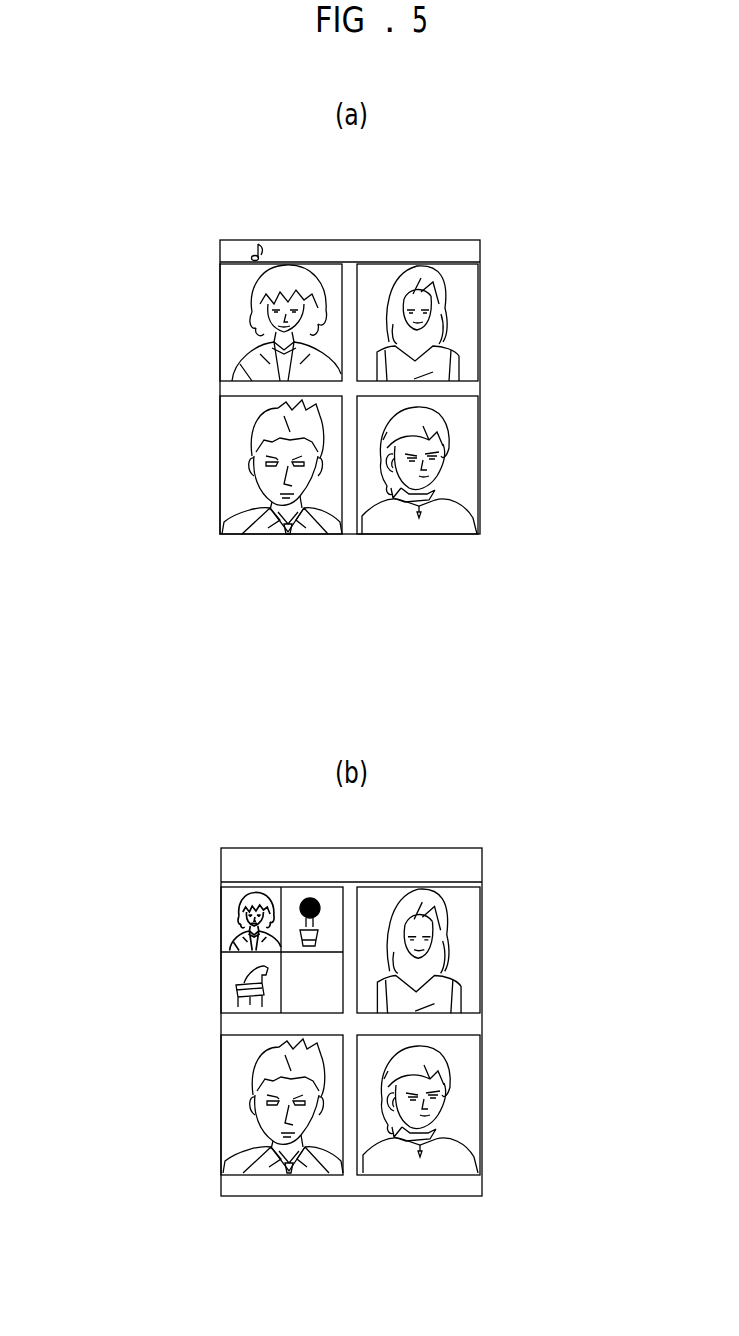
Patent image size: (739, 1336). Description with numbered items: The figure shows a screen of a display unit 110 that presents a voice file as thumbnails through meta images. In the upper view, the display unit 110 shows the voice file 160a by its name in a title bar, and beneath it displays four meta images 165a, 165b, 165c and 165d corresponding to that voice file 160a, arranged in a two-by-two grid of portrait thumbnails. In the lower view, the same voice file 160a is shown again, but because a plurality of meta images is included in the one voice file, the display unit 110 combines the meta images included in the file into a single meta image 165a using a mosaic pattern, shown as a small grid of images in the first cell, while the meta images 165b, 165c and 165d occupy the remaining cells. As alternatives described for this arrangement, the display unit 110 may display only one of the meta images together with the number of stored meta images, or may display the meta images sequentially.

The display unit 110 is at (350, 240).
The voice file 160a is at (474, 252).
The meta image 165a is at (220, 345).
The meta image 165b is at (480, 343).
The meta image 165c is at (450, 534).
The meta image 165d is at (275, 534).